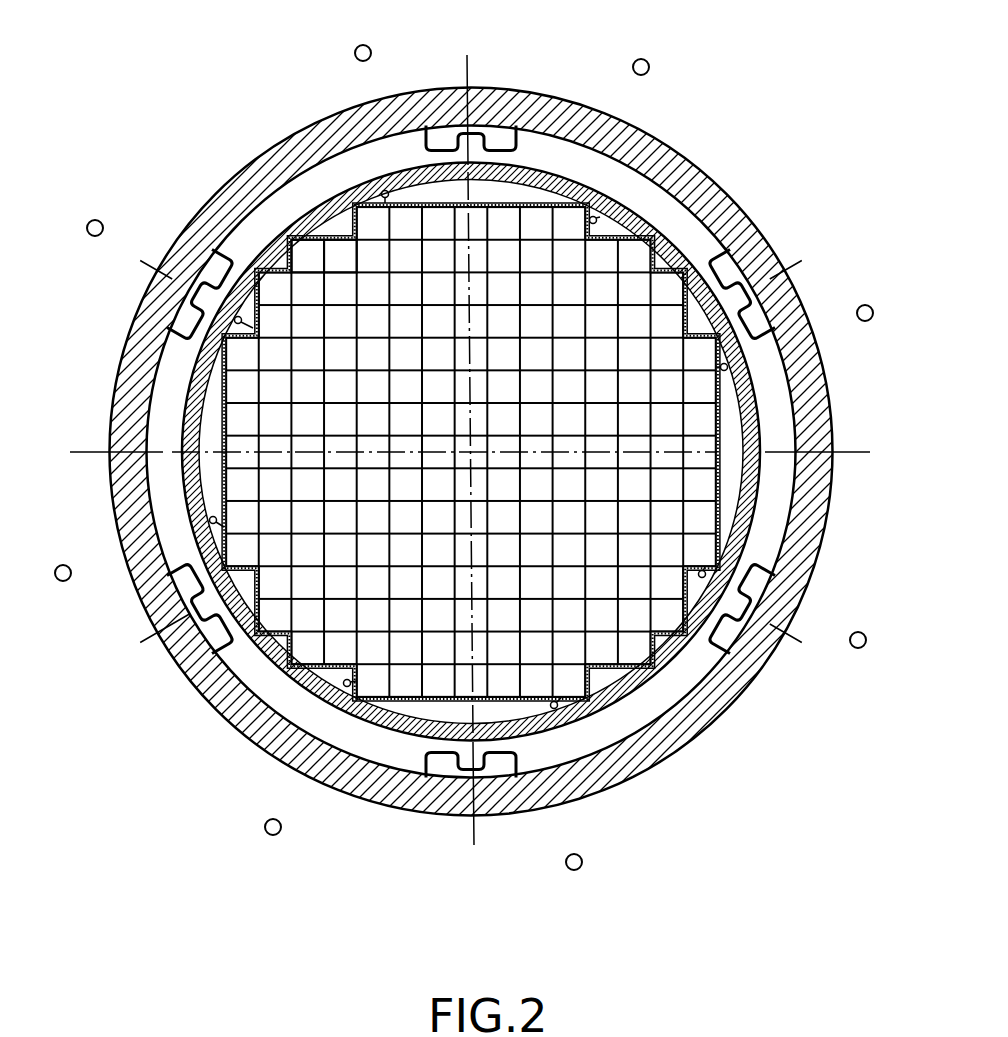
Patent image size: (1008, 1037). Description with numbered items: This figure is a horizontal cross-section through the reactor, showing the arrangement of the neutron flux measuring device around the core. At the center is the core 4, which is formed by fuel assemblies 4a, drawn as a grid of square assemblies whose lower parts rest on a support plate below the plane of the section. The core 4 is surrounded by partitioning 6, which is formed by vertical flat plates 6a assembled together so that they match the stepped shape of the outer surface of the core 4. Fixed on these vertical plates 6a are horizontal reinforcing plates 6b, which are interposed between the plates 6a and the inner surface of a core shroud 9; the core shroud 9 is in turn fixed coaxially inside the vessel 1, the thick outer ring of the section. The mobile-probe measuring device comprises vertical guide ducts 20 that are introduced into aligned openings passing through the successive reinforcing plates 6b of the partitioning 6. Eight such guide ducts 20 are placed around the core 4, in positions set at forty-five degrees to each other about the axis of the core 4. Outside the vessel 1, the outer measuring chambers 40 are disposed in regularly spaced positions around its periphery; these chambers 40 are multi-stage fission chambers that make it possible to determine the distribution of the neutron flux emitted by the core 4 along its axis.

The vessel 1 is at (797, 555).
The core 4 is at (471, 452).
The fuel assemblies 4a is at (340, 252).
The partitioning 6 is at (694, 314).
The vertical flat plates 6a is at (713, 425).
The horizontal reinforcing plates 6b is at (732, 501).
The core shroud 9 is at (641, 688).
The guide duct 20 is at (600, 217).
The outer chambers 40 is at (373, 52).